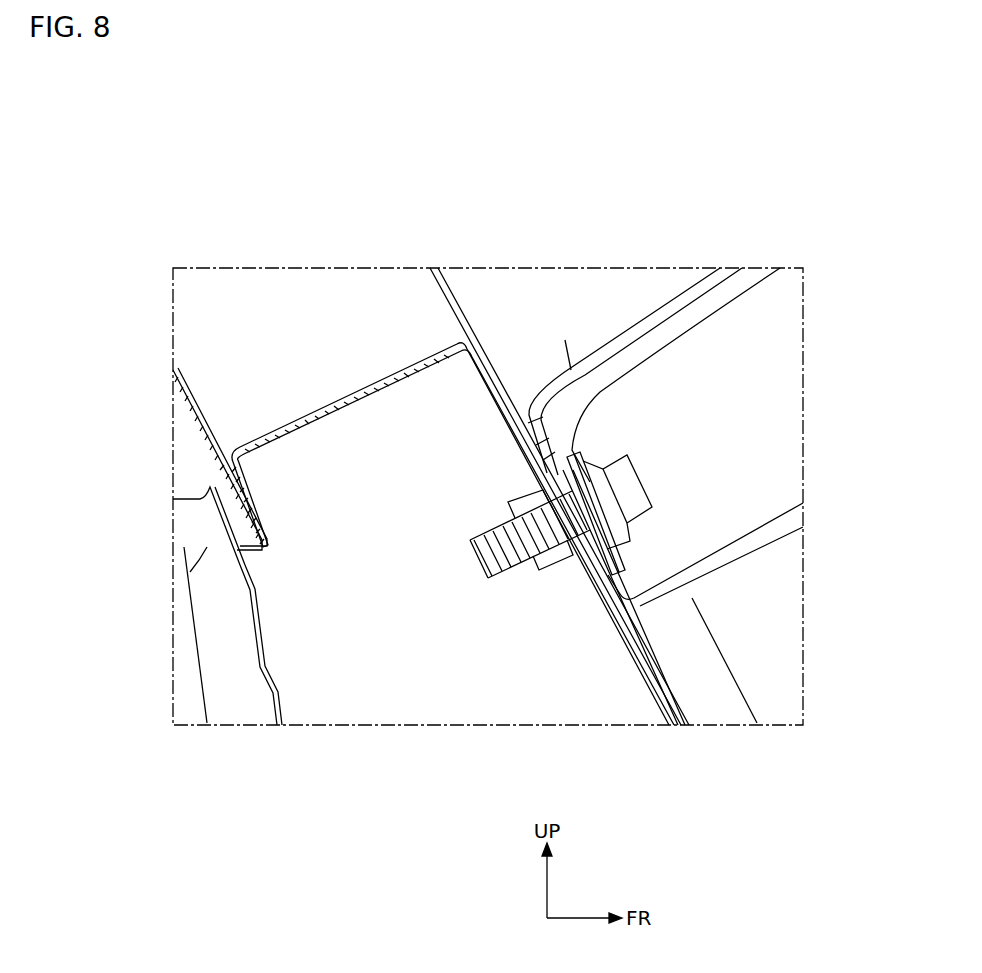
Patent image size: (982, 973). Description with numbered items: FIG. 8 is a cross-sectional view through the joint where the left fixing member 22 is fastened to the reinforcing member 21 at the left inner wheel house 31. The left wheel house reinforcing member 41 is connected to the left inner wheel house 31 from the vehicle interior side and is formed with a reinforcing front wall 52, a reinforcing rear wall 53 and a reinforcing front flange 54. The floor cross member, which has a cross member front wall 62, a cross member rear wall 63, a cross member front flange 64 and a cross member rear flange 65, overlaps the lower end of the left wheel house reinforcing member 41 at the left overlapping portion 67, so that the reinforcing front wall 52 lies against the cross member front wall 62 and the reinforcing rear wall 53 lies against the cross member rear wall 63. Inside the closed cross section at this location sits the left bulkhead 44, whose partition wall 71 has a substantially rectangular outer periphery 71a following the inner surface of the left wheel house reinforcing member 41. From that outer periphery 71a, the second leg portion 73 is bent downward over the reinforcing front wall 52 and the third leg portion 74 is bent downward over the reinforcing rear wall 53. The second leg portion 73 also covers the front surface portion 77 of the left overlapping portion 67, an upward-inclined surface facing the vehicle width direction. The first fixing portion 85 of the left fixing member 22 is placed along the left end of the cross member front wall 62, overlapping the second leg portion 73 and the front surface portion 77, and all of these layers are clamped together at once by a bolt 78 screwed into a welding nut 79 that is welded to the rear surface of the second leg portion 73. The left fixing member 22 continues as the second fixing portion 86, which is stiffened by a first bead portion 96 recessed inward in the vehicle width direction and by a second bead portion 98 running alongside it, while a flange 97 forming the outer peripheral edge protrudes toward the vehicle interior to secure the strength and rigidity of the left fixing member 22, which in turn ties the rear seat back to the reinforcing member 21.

The reinforcing member 21 is at (443, 169).
The left fixing member 22 is at (762, 396).
The left inner wheel house 31 is at (391, 632).
The left wheel house reinforcing member 41 is at (448, 279).
The left bulkhead 44 is at (360, 387).
The reinforcing front wall 52 is at (592, 355).
The reinforcing rear wall 53 is at (193, 468).
The reinforcing front flange 54 is at (527, 313).
The cross member front wall 62 is at (620, 568).
The cross member rear wall 63 is at (232, 682).
The cross member front flange 64 is at (713, 677).
The cross member rear flange 65 is at (188, 652).
The left overlapping portion 67 is at (190, 572).
The partition wall 71 is at (288, 423).
The outer periphery 71a is at (470, 337).
The second leg portion 73 is at (522, 398).
The third leg portion 74 is at (242, 510).
The front surface portion 77 is at (567, 453).
The bolt 78 is at (625, 487).
The welding nut 79 is at (558, 565).
The first fixing portion 85 is at (605, 543).
The second fixing portion 86 is at (763, 432).
The first bead portion 96 is at (693, 460).
The flange 97 is at (700, 283).
The second bead portion 98 is at (747, 289).